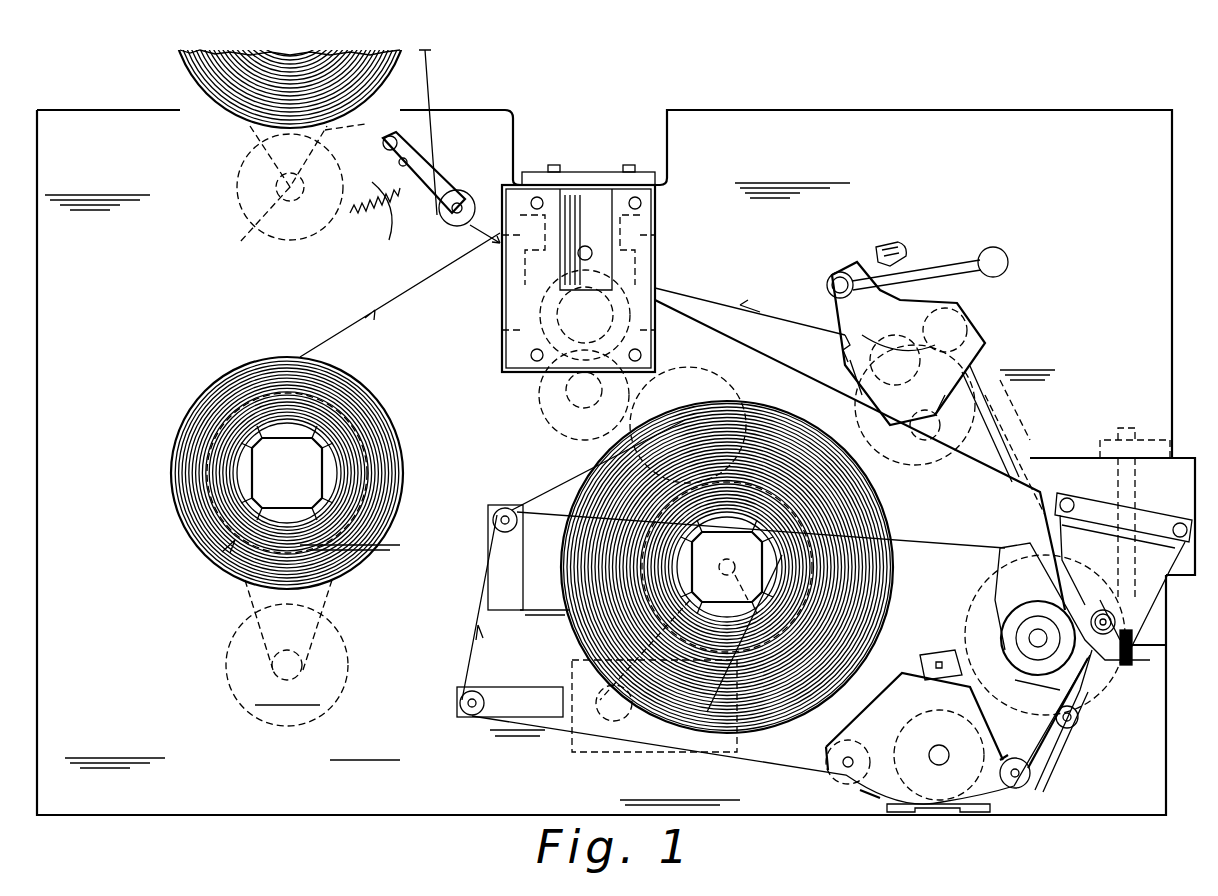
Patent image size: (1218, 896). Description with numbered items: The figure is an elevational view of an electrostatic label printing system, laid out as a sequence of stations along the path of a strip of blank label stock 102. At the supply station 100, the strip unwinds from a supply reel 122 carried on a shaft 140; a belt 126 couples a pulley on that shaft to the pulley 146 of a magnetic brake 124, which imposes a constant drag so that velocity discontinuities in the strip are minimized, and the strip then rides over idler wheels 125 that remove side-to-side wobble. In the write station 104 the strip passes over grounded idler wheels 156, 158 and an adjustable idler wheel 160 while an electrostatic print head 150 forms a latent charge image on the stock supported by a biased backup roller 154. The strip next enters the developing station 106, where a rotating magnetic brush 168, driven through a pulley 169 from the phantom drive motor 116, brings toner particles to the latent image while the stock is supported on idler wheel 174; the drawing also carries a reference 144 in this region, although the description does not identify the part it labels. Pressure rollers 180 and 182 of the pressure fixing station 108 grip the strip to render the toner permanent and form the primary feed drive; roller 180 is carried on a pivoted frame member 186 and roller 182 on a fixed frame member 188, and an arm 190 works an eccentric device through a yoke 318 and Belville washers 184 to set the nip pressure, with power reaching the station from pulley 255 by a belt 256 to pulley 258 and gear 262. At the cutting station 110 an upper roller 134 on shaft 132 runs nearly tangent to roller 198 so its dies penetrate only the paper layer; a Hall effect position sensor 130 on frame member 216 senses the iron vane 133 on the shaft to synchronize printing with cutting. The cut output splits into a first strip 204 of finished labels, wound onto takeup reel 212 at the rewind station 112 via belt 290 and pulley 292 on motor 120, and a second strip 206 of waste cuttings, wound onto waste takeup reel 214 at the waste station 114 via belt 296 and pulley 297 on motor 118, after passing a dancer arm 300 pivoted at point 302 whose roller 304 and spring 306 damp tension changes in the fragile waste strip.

The supply station 100 is at (540, 740).
The strip of blank label stock 102 is at (768, 318).
The write station 104 is at (892, 831).
The developing station 106 is at (1158, 611).
The pressure fixing station 108 is at (1009, 349).
The cutting station 110 is at (669, 272).
The rewind station 112 is at (162, 568).
The waste station 114 is at (192, 128).
The drive motor 116 is at (741, 378).
The motor 118 is at (237, 185).
The motor 120 is at (226, 667).
The supply reel 122 is at (690, 735).
The magnetic brake 124 is at (572, 755).
The idler wheel 125 is at (500, 512).
The belt 126 is at (712, 715).
The Hall effect position sensor 130 is at (575, 200).
The shaft 132 is at (590, 250).
The iron vane 133 is at (655, 237).
The upper roller 134 is at (648, 280).
The shaft 140 is at (800, 700).
The tape path 144 is at (768, 440).
The pulley 146 is at (616, 722).
The electrostatic print head 150 is at (955, 815).
The backup roller 154 is at (858, 785).
The idler wheel 156 is at (845, 757).
The idler wheel 158 is at (1022, 783).
The idler wheel 160 is at (1085, 722).
The rotating magnetic brush 168 is at (1125, 632).
The pulley 169 is at (1140, 648).
The idler wheel 174 is at (1085, 700).
The pressure roller 180 is at (960, 325).
The pressure roller 182 is at (882, 368).
The Belville washers 184 is at (886, 248).
The pivoted frame member 186 is at (890, 295).
The fixed frame member 188 is at (848, 312).
The arm 190 is at (955, 265).
The roller 198 is at (503, 328).
The first strip 204 is at (300, 345).
The second strip 206 is at (428, 70).
The takeup reel 212 is at (178, 530).
The waste takeup reel 214 is at (195, 72).
The frame member 216 is at (502, 272).
The pulley 255 is at (1140, 500).
The belt 256 is at (1032, 447).
The pulley 258 is at (1005, 425).
The gear 262 is at (915, 440).
The belt 290 is at (250, 602).
The pulley 292 is at (287, 665).
The belt 296 is at (361, 122).
The pulley 297 is at (249, 223).
The dancer arm 300 is at (428, 170).
The pivot point 302 is at (396, 138).
The roller 304 is at (447, 225).
The spring 306 is at (376, 218).
The yoke 318 is at (872, 256).